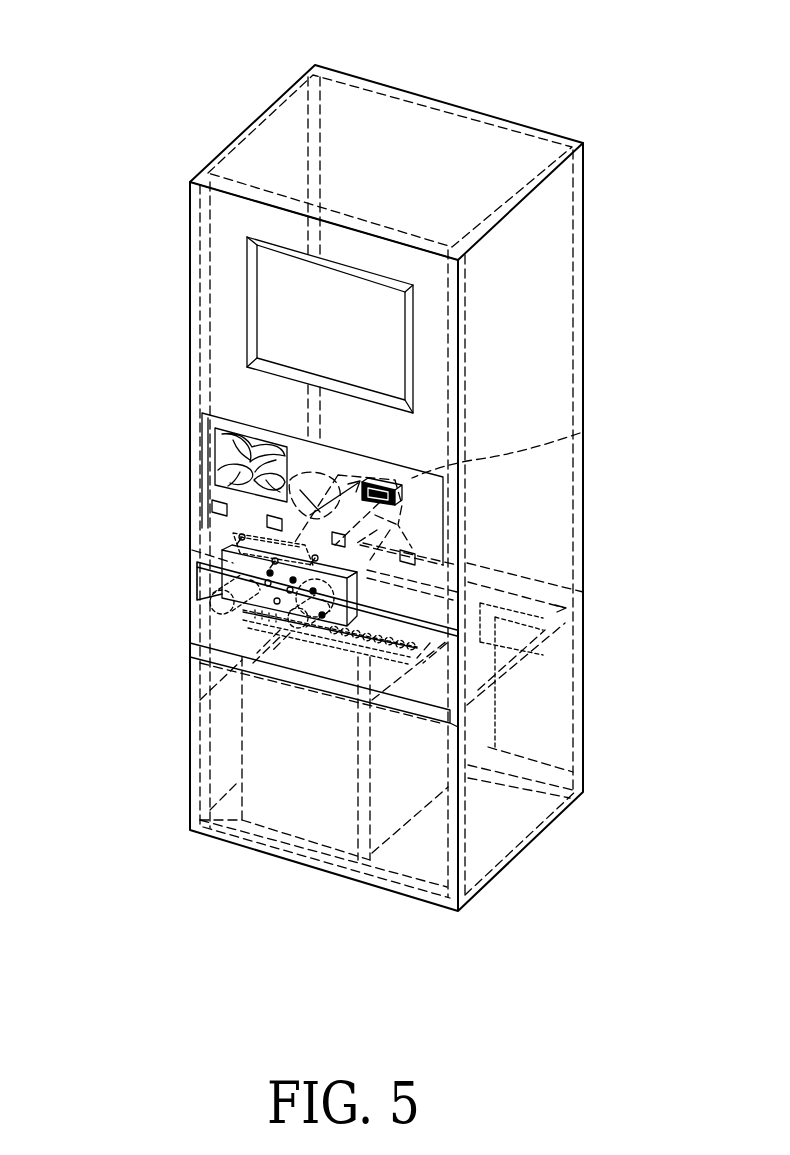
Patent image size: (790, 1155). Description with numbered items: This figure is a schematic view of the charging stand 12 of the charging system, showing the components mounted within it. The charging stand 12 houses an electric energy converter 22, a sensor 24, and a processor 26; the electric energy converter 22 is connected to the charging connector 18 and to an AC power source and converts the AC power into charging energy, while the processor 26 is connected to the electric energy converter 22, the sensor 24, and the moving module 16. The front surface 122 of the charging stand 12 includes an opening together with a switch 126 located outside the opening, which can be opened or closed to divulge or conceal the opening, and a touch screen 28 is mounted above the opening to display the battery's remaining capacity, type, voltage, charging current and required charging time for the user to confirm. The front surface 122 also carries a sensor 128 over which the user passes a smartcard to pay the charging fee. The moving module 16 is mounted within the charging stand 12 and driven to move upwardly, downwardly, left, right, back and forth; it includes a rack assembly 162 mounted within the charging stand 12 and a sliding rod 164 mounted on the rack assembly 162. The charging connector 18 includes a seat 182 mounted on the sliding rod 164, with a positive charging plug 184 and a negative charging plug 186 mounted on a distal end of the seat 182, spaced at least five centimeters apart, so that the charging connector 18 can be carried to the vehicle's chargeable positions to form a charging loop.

The charging stand 12 is at (265, 90).
The front surface 122 is at (220, 235).
The touch screen 28 is at (390, 347).
The moving module 16 is at (198, 445).
The sensor 128 is at (220, 478).
The seat 182 is at (210, 534).
The charging connector 18 is at (192, 553).
The positive charging plug 184 is at (212, 602).
The negative charging plug 186 is at (203, 685).
The switch 126 is at (227, 633).
The electric energy converter 22 is at (287, 848).
The sensor 24 is at (340, 533).
The sliding rod 164 is at (580, 433).
The rack assembly 162 is at (583, 610).
The processor 26 is at (548, 730).